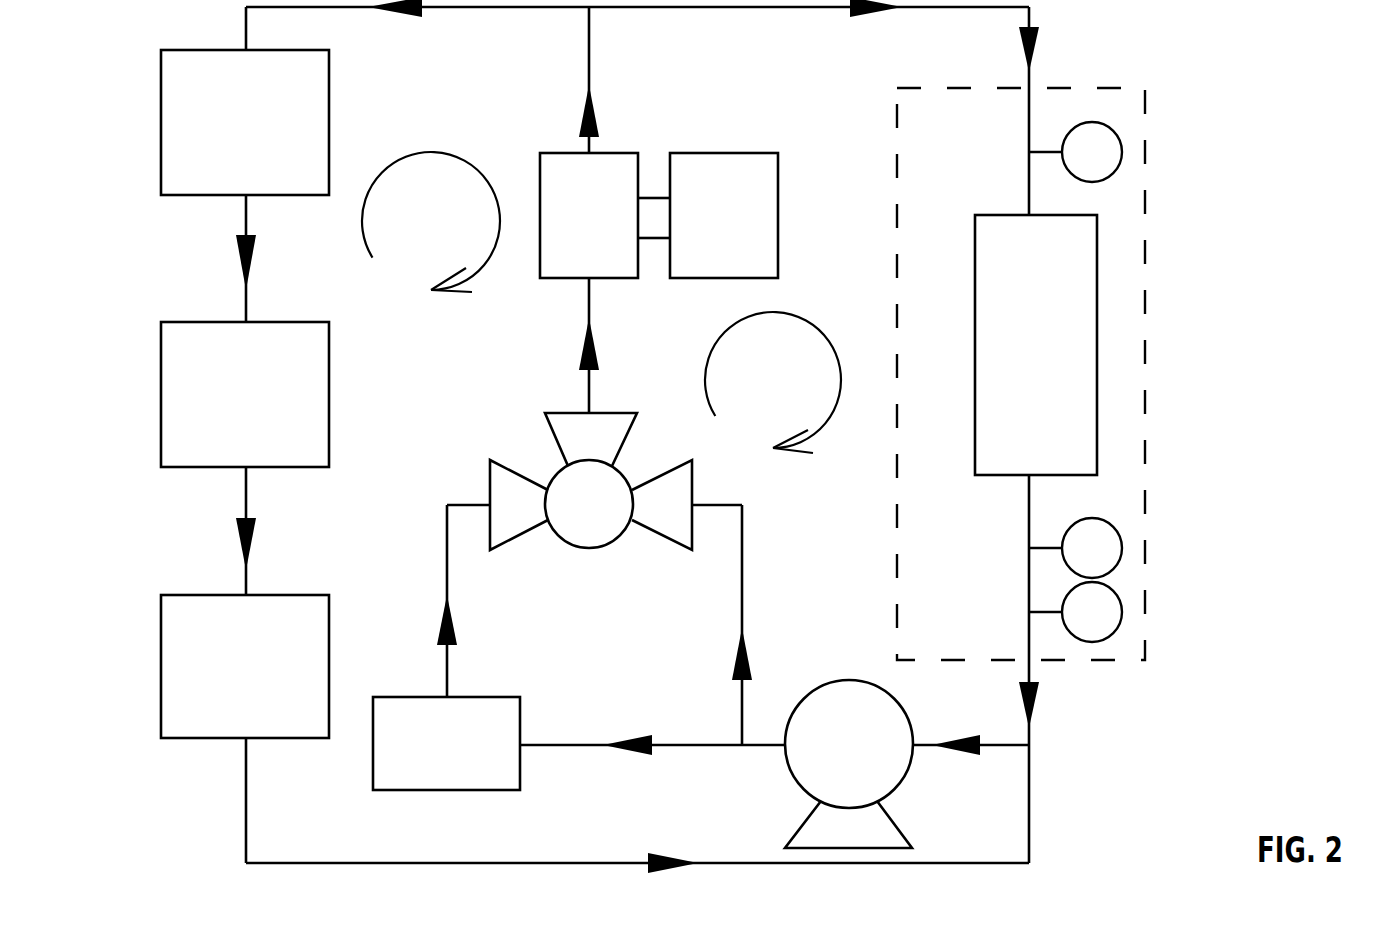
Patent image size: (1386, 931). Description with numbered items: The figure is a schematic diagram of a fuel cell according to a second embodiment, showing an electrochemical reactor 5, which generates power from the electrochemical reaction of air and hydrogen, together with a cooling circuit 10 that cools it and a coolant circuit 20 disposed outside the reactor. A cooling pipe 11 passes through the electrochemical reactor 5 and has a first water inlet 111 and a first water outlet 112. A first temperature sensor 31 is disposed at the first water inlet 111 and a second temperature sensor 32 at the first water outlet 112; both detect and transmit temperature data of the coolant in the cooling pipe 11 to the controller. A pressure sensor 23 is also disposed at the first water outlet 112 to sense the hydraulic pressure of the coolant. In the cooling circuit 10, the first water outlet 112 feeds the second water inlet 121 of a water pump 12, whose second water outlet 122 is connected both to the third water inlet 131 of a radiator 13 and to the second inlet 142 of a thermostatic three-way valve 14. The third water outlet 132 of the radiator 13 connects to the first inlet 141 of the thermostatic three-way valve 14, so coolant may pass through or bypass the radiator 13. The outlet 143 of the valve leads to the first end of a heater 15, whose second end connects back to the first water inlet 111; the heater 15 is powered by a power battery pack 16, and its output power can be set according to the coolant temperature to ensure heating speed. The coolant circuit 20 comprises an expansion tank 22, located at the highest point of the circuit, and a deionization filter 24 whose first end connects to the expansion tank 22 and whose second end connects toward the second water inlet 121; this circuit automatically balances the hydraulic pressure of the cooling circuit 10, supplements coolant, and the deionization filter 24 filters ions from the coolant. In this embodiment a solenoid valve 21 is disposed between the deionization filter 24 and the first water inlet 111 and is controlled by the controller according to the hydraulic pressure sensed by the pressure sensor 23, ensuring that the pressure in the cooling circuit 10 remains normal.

The electrochemical reactor 5 is at (1021, 374).
The cooling circuit 10 is at (773, 382).
The cooling pipe 11 is at (1036, 345).
The first water inlet 111 is at (1007, 184).
The first water outlet 112 is at (1007, 511).
The water pump 12 is at (849, 764).
The second water inlet 121 is at (971, 761).
The second water outlet 122 is at (758, 645).
The radiator 13 is at (446, 743).
The third water inlet 131 is at (631, 734).
The third water outlet 132 is at (425, 601).
The thermostatic three-way valve 14 is at (591, 494).
The first inlet 141 is at (494, 505).
The second inlet 142 is at (687, 505).
The outlet 143 is at (591, 418).
The heater 15 is at (589, 215).
The power battery pack 16 is at (708, 215).
The coolant circuit 20 is at (431, 222).
The solenoid valve 21 is at (245, 122).
The expansion tank 22 is at (245, 666).
The pressure sensor 23 is at (1105, 522).
The deionization filter 24 is at (245, 394).
The first temperature sensor 31 is at (1092, 123).
The second temperature sensor 32 is at (1098, 641).